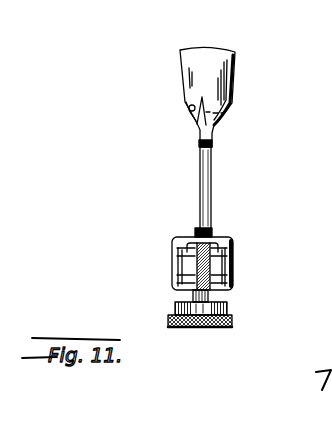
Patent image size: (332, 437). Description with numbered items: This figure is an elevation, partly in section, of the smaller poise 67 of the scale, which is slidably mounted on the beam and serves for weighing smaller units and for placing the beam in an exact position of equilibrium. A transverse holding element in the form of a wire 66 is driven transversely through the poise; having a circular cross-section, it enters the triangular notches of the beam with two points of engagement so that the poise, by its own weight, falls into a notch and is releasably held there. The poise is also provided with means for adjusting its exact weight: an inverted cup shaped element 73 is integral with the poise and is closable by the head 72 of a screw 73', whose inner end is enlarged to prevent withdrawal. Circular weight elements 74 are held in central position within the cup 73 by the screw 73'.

The wire 66 is at (183, 104).
The smaller poise 67 is at (237, 74).
The head 72 is at (232, 323).
The inverted cup shaped element 73 is at (226, 262).
The screw 73' is at (237, 295).
The circular weight elements 74 is at (227, 308).